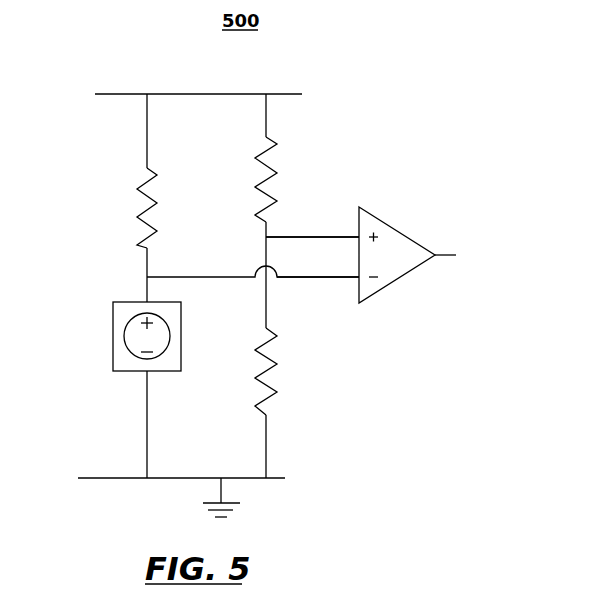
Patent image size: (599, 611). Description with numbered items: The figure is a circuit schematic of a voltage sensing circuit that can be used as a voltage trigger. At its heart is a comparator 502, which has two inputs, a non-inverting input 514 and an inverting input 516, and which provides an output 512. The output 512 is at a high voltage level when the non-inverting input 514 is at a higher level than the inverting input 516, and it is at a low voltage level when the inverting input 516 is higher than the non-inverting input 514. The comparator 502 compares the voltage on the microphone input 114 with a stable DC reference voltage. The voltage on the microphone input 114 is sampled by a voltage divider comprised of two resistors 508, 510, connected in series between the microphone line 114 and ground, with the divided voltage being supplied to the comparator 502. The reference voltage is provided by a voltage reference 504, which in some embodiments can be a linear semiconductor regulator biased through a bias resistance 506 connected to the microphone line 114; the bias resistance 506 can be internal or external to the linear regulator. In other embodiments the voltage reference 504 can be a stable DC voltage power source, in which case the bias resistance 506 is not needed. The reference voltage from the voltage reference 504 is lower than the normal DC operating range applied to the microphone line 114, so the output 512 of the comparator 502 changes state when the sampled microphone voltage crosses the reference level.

The microphone input 114 is at (123, 94).
The comparator 502 is at (365, 207).
The voltage reference 504 is at (113, 343).
The bias resistance 506 is at (142, 218).
The resistor 508 is at (260, 188).
The resistor 510 is at (272, 362).
The output 512 is at (453, 256).
The non-inverting input 514 is at (311, 237).
The inverting input 516 is at (315, 277).